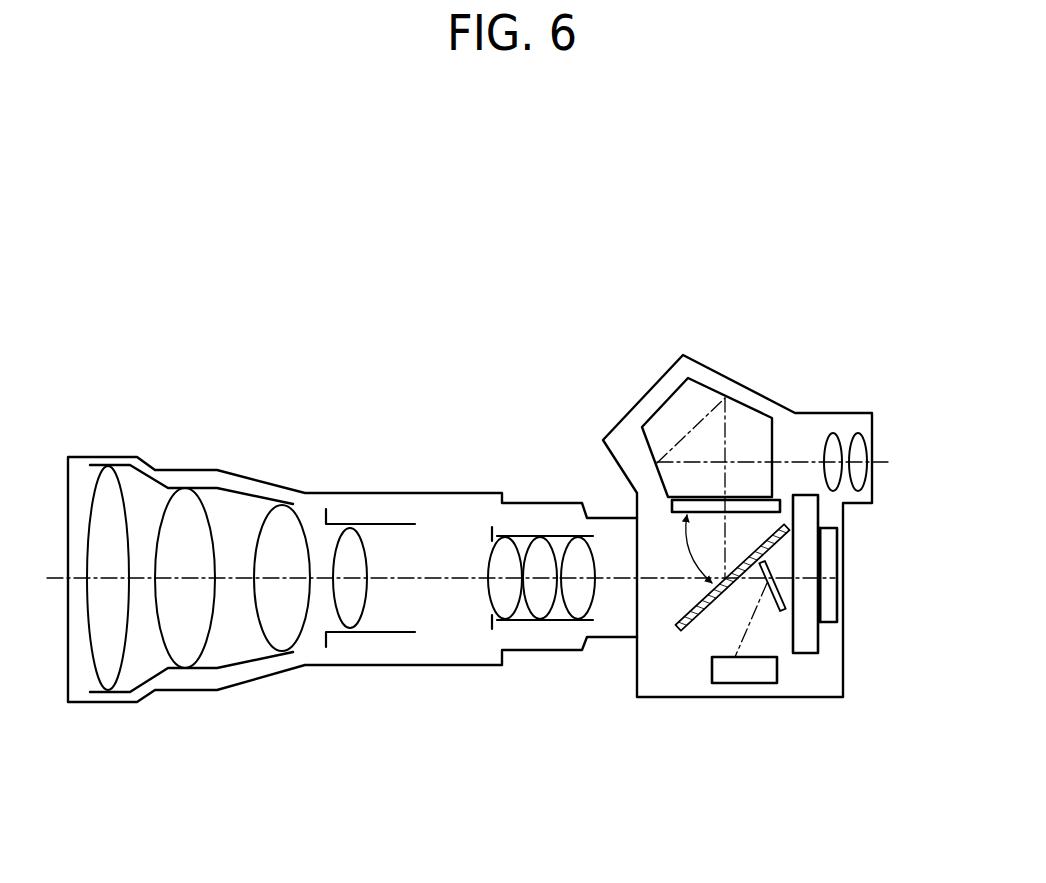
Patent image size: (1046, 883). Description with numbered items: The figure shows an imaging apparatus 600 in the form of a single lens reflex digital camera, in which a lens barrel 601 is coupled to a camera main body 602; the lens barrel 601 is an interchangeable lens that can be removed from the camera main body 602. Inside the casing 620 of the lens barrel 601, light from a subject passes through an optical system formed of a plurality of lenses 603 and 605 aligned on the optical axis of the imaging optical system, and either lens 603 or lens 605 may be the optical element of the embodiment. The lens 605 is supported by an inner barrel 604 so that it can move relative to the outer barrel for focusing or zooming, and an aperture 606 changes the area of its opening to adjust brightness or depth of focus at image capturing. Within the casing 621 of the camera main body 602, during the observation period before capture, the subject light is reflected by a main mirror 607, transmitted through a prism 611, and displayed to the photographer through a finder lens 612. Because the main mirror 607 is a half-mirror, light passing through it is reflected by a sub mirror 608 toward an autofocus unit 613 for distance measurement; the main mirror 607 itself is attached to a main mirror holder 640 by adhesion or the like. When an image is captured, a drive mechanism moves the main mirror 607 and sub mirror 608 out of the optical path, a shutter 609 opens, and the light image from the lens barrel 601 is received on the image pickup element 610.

The imaging apparatus (camera system) 600 is at (548, 220).
The lens barrel 601 is at (613, 298).
The camera main body 602 is at (897, 298).
The lens 603 is at (117, 513).
The inner barrel 604 is at (374, 524).
The lens 605 is at (350, 617).
The aperture 606 is at (491, 527).
The main mirror 607 is at (682, 626).
The sub mirror 608 is at (782, 592).
The shutter 609 is at (808, 645).
The image pickup element 610 is at (827, 600).
The prism 611 is at (748, 430).
The finder lens 612 is at (858, 452).
The autofocus (AF) unit 613 is at (733, 671).
The casing 620 is at (258, 478).
The casing 621 is at (643, 401).
The main mirror holder 640 is at (684, 614).